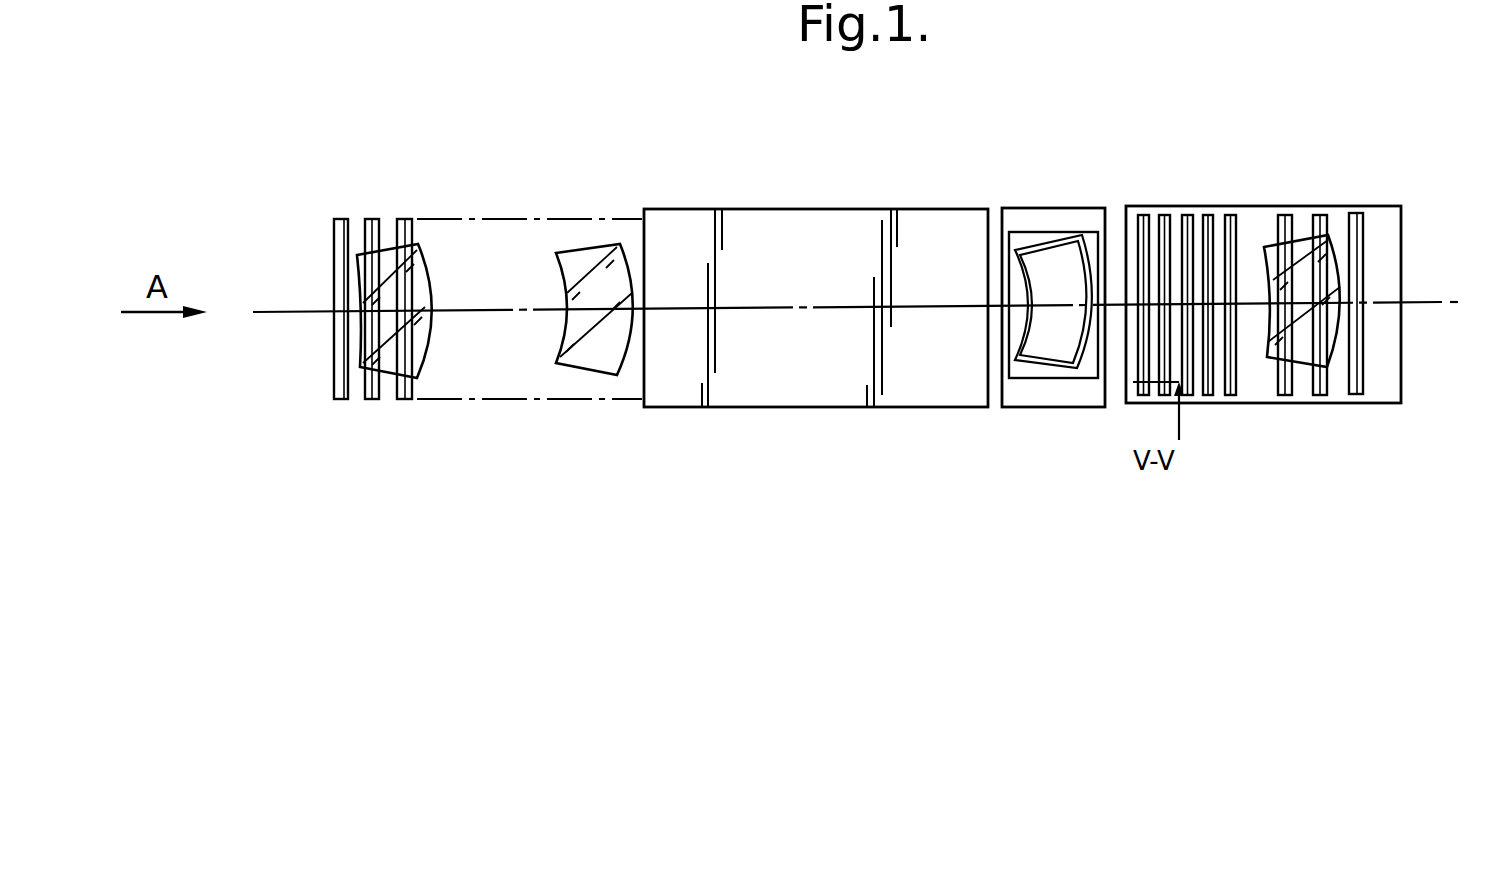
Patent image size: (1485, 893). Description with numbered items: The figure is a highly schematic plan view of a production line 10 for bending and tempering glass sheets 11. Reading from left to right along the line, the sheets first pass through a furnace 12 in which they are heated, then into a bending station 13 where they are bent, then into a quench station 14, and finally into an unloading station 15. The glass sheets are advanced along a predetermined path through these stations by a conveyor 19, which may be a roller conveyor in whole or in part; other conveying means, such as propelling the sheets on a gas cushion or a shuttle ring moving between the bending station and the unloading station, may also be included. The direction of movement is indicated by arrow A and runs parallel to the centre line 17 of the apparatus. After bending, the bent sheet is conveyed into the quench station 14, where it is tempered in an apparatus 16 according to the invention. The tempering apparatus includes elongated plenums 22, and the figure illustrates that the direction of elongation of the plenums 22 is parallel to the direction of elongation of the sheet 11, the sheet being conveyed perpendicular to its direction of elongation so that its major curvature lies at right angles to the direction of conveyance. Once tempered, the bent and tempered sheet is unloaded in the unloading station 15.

The production line 10 is at (776, 129).
The glass sheet 11 is at (425, 257).
The furnace 12 is at (754, 196).
The bending station 13 is at (1050, 194).
The quench station 14 is at (1180, 186).
The unloading station 15 is at (1305, 186).
The apparatus for tempering 16 is at (1187, 292).
The centre line 17 is at (283, 310).
The conveyor 19 is at (350, 224).
The plenums 22 is at (1208, 385).